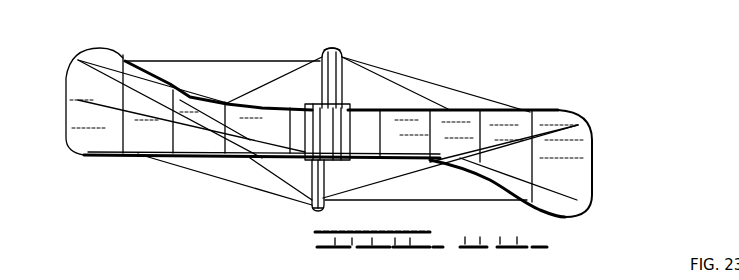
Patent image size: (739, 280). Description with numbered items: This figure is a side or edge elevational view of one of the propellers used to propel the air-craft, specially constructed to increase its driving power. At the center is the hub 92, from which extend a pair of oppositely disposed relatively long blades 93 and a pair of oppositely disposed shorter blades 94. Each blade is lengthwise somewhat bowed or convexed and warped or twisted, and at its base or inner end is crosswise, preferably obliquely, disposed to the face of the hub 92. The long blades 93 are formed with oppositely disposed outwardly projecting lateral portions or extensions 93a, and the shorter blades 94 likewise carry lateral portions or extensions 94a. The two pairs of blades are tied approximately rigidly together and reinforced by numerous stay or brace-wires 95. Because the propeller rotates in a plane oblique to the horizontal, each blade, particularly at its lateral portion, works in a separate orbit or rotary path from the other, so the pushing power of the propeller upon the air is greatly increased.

The hub 92 is at (342, 200).
The long blades 93 is at (150, 135).
The lateral portions or extensions of the long blades 93a is at (97, 53).
The shorter blades 94 is at (345, 97).
The lateral portions or extensions of the shorter blades 94a is at (338, 50).
The stay or brace-wires 95 is at (440, 85).